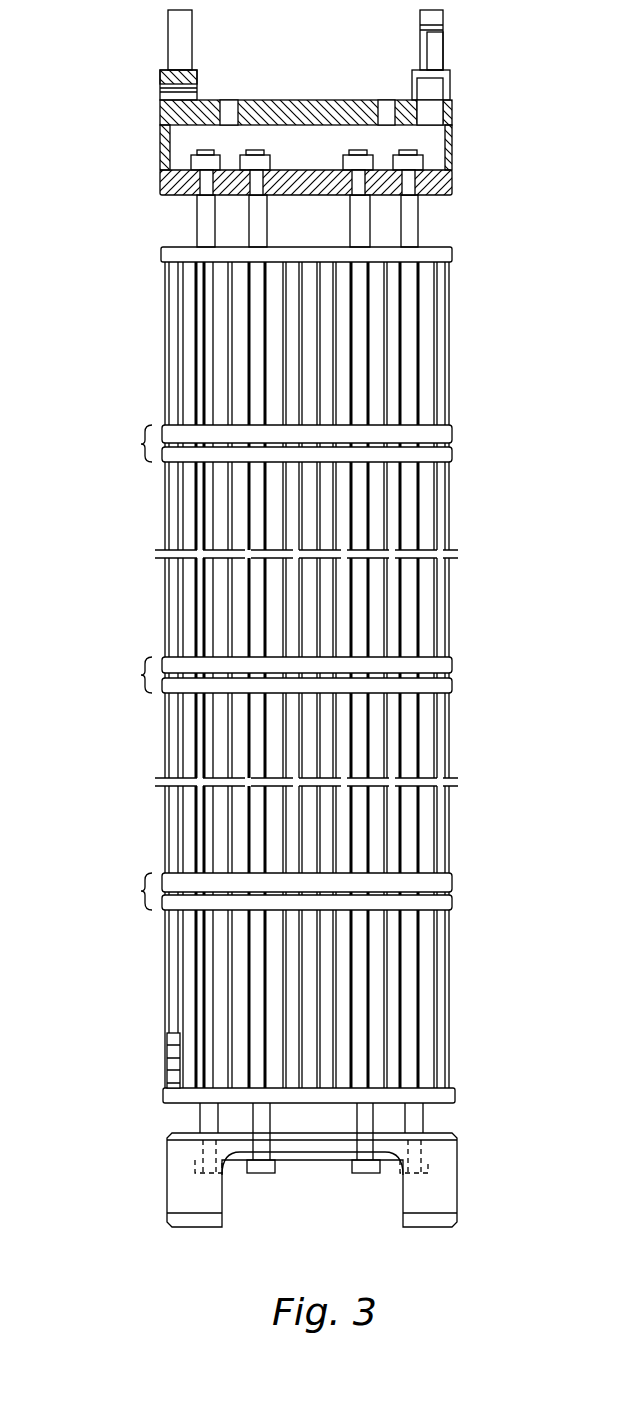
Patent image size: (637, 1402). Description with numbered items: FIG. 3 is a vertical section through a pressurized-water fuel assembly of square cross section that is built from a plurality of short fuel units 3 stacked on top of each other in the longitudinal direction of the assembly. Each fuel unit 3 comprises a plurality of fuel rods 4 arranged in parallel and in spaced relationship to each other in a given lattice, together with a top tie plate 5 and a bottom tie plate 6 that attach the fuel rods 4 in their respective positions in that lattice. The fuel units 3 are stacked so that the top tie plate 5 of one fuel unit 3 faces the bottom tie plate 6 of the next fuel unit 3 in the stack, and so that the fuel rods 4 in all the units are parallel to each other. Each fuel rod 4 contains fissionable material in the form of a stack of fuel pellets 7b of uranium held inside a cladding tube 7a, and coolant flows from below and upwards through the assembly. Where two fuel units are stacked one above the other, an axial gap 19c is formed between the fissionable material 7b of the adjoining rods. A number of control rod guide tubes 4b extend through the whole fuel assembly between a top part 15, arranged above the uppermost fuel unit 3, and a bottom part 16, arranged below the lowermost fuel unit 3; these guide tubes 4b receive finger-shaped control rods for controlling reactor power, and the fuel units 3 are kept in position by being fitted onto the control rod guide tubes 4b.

The fuel unit 3 is at (456, 608).
The fuel rod 4 is at (202, 388).
The control rod guide tube 4b is at (357, 215).
The top tie plate 5 is at (497, 922).
The bottom tie plate 6 is at (498, 866).
The cladding tube 7a is at (166, 1003).
The fuel pellet 7b is at (172, 1080).
The top part 15 is at (452, 178).
The bottom part 16 is at (440, 1188).
The axial gap 19c is at (138, 891).